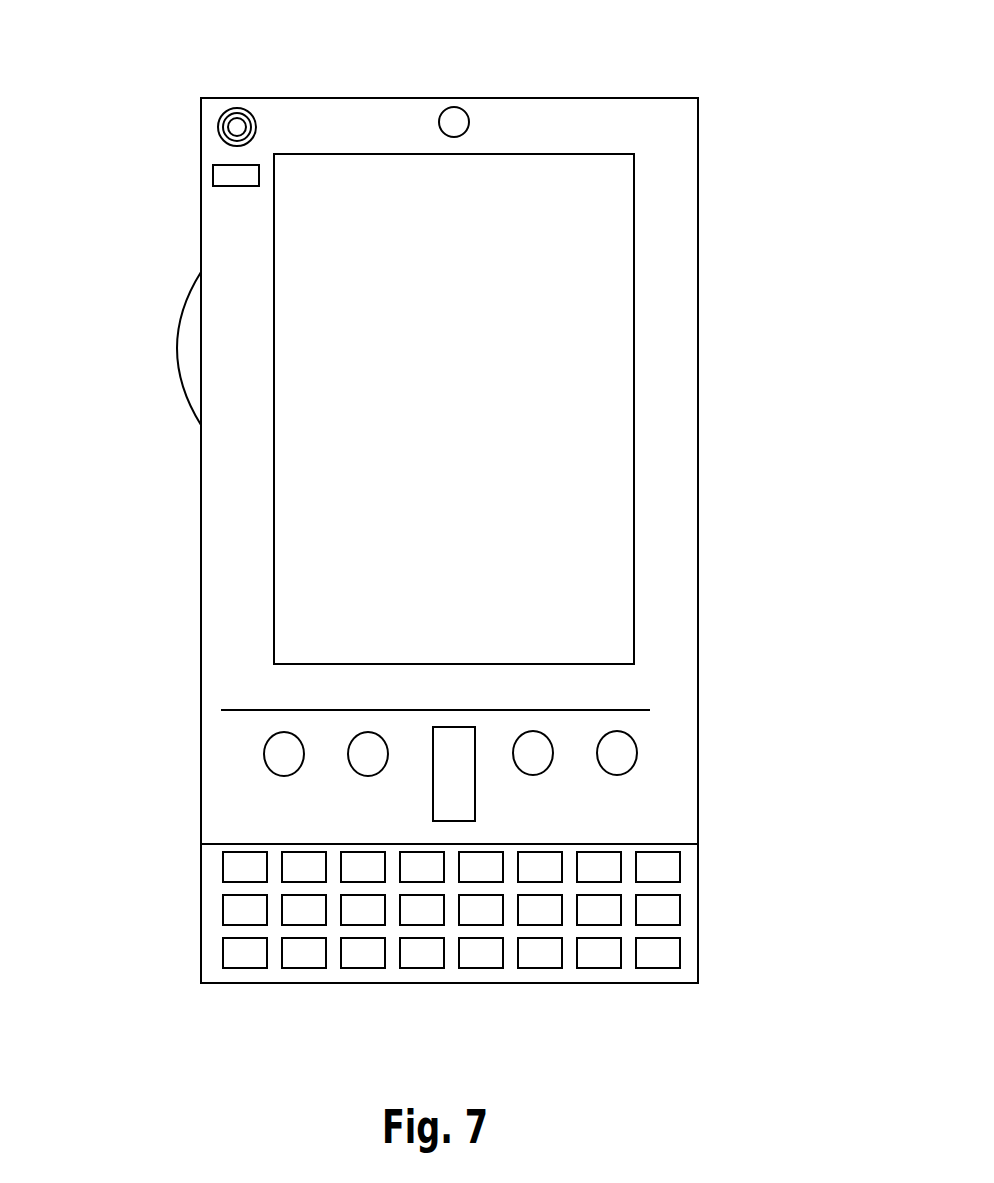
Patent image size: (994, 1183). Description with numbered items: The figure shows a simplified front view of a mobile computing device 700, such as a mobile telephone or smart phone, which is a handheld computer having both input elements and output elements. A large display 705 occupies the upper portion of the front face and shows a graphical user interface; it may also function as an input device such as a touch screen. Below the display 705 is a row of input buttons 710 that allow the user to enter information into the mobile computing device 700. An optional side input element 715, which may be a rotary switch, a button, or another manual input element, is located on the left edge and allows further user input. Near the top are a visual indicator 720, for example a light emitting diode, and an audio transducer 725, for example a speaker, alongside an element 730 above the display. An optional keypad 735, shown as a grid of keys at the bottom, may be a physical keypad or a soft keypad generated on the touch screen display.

The mobile computing device 700 is at (685, 117).
The display 705 is at (385, 578).
The input buttons 710 is at (452, 780).
The side input element 715 is at (190, 348).
The visual indicator 720 is at (213, 181).
The audio transducer 725 is at (218, 127).
The speaker 730 is at (465, 120).
The keypad 735 is at (208, 958).